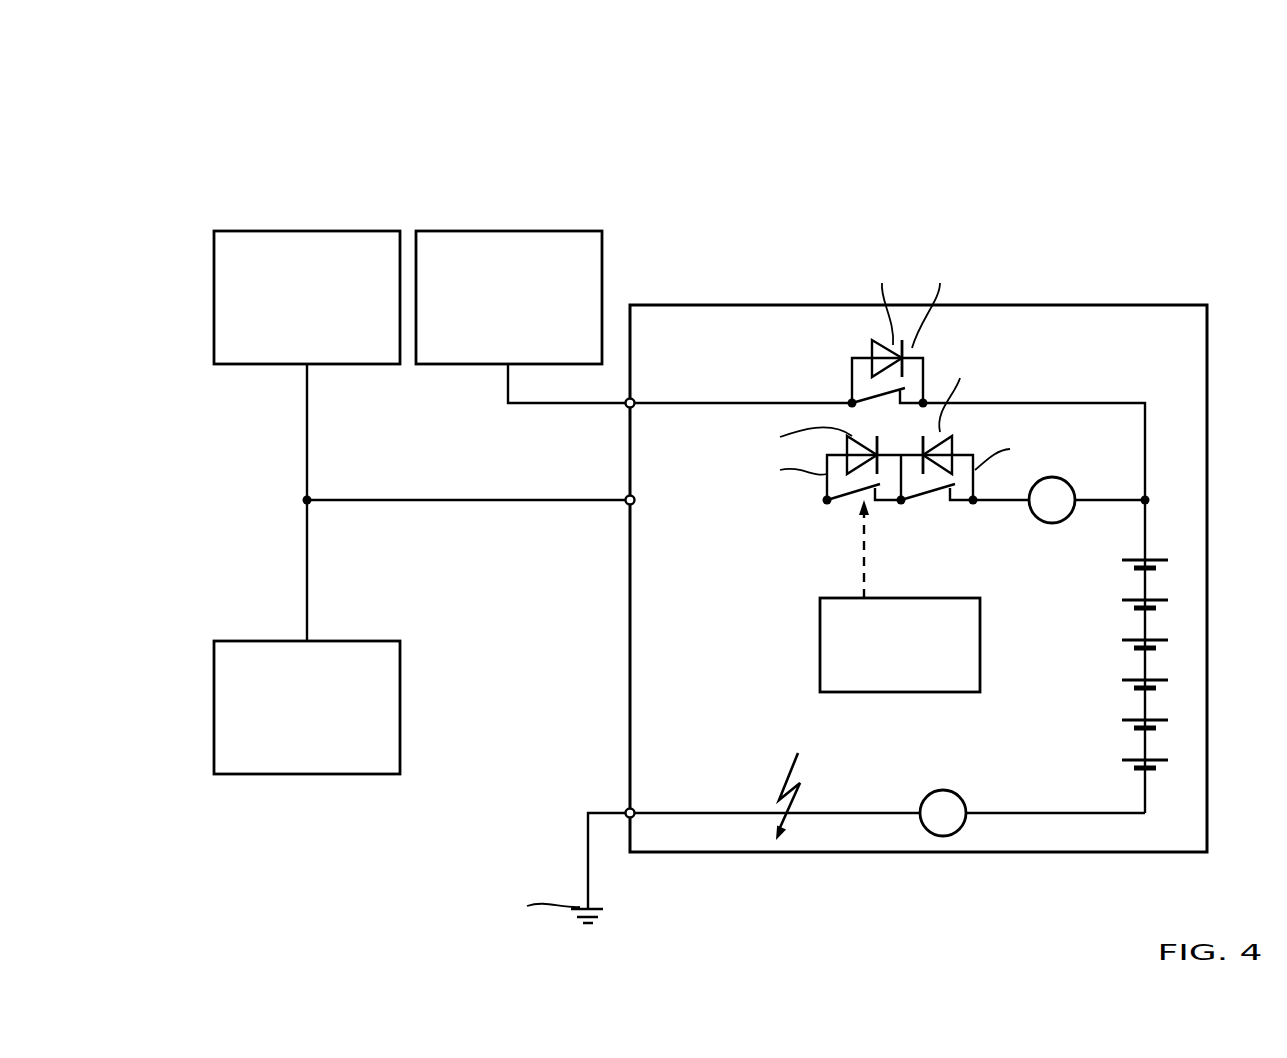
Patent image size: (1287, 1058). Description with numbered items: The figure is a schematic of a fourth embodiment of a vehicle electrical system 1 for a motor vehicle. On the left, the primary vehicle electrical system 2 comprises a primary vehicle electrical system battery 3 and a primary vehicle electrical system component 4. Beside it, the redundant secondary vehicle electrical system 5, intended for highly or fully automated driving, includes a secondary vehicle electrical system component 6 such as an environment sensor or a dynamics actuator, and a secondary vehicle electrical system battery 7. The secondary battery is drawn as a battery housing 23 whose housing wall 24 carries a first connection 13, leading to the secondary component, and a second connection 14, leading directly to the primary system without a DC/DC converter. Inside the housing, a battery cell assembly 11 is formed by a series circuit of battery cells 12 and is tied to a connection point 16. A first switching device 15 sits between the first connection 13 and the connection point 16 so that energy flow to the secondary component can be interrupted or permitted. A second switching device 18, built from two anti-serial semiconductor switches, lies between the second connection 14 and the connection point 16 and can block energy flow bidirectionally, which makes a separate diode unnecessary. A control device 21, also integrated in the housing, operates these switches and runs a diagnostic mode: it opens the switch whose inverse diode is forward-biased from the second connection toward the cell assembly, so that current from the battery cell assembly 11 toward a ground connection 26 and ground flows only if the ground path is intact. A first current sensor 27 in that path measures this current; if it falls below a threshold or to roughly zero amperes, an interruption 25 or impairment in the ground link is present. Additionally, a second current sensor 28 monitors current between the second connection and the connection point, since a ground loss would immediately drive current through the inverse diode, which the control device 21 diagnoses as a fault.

The vehicle electrical system 1 is at (1137, 180).
The primary vehicle electrical system 2 is at (247, 183).
The primary vehicle electrical system battery 3 is at (307, 775).
The primary vehicle electrical system component 4 is at (336, 231).
The secondary vehicle electrical system 5 is at (891, 210).
The secondary vehicle electrical system component 6 is at (543, 231).
The secondary vehicle electrical system battery 7 is at (735, 312).
The battery cell assembly 11 is at (1165, 540).
The battery cells 12 is at (1157, 608).
The first connection 13 is at (628, 407).
The second connection 14 is at (628, 503).
The first switching device 15 is at (976, 330).
The connection point 16 is at (1150, 500).
The second switching device 18 is at (832, 520).
The control device 21 is at (860, 692).
The battery housing 23 is at (712, 852).
The housing wall 24 is at (615, 695).
The interruption 25 is at (785, 790).
The ground connection 26 is at (628, 811).
The first current sensor 27 is at (962, 794).
The second current sensor 28 is at (1052, 523).